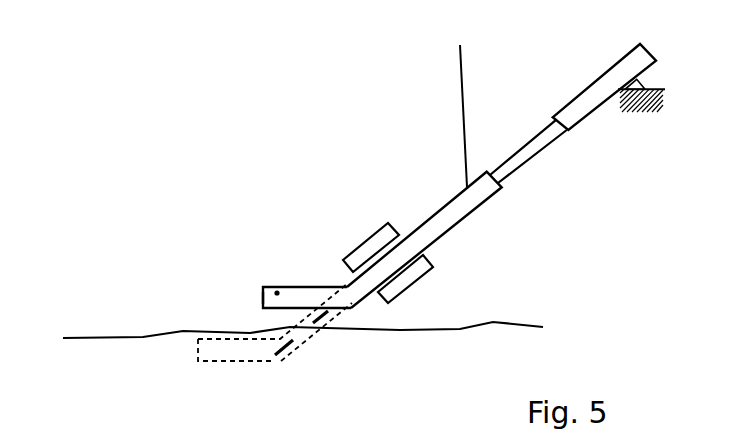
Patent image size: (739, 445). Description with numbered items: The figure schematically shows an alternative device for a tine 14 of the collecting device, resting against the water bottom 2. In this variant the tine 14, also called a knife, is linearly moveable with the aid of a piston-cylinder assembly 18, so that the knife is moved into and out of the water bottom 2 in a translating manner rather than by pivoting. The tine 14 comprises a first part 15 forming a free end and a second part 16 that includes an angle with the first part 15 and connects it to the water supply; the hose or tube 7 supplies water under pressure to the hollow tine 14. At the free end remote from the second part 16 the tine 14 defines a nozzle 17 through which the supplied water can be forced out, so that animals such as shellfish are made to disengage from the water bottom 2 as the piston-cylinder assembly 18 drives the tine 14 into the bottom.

The water bottom 2 is at (92, 337).
The flexible hose or tube 7 is at (460, 81).
The tine 14 is at (300, 282).
The first part 15 is at (277, 292).
The second part 16 is at (468, 215).
The nozzle 17 is at (234, 300).
The piston-cylinder assembly 18 is at (612, 63).